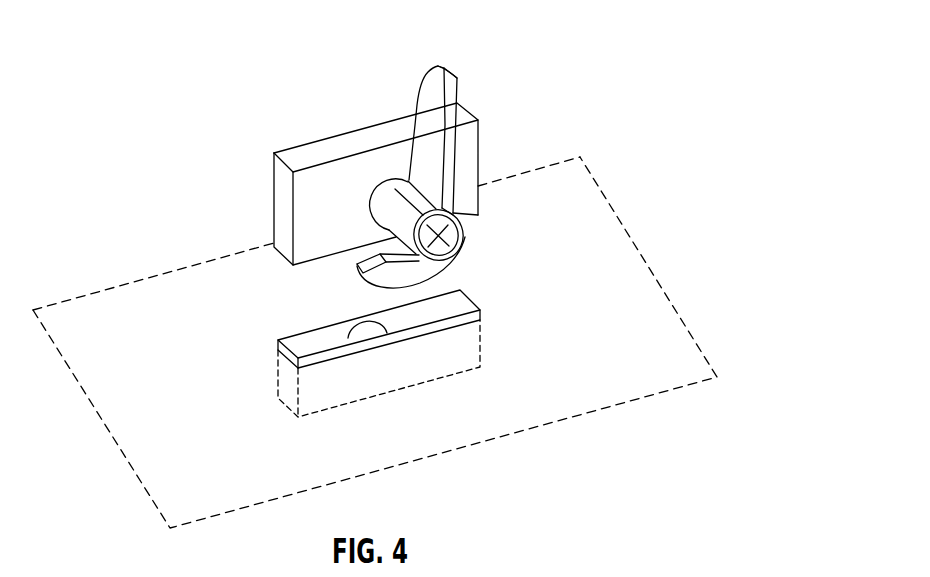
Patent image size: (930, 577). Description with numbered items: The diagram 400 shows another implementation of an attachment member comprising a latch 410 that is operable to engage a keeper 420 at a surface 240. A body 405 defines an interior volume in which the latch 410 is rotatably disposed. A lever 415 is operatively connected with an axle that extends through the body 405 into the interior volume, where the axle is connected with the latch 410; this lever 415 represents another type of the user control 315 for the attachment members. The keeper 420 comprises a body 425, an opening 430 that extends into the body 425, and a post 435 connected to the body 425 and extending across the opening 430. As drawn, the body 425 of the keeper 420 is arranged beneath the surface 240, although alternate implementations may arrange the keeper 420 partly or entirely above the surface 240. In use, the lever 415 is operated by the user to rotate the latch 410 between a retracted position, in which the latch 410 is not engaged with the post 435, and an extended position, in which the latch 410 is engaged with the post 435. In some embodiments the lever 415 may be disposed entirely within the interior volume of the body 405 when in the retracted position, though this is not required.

The diagram 400 is at (413, 269).
The surface 240 is at (128, 467).
The body 405 is at (298, 148).
The user control 315 is at (498, 125).
The lever 415 is at (446, 71).
The latch 410 is at (440, 263).
The keeper 420 is at (415, 342).
The body 425 is at (440, 367).
The opening 430 is at (369, 318).
The post 435 is at (370, 337).